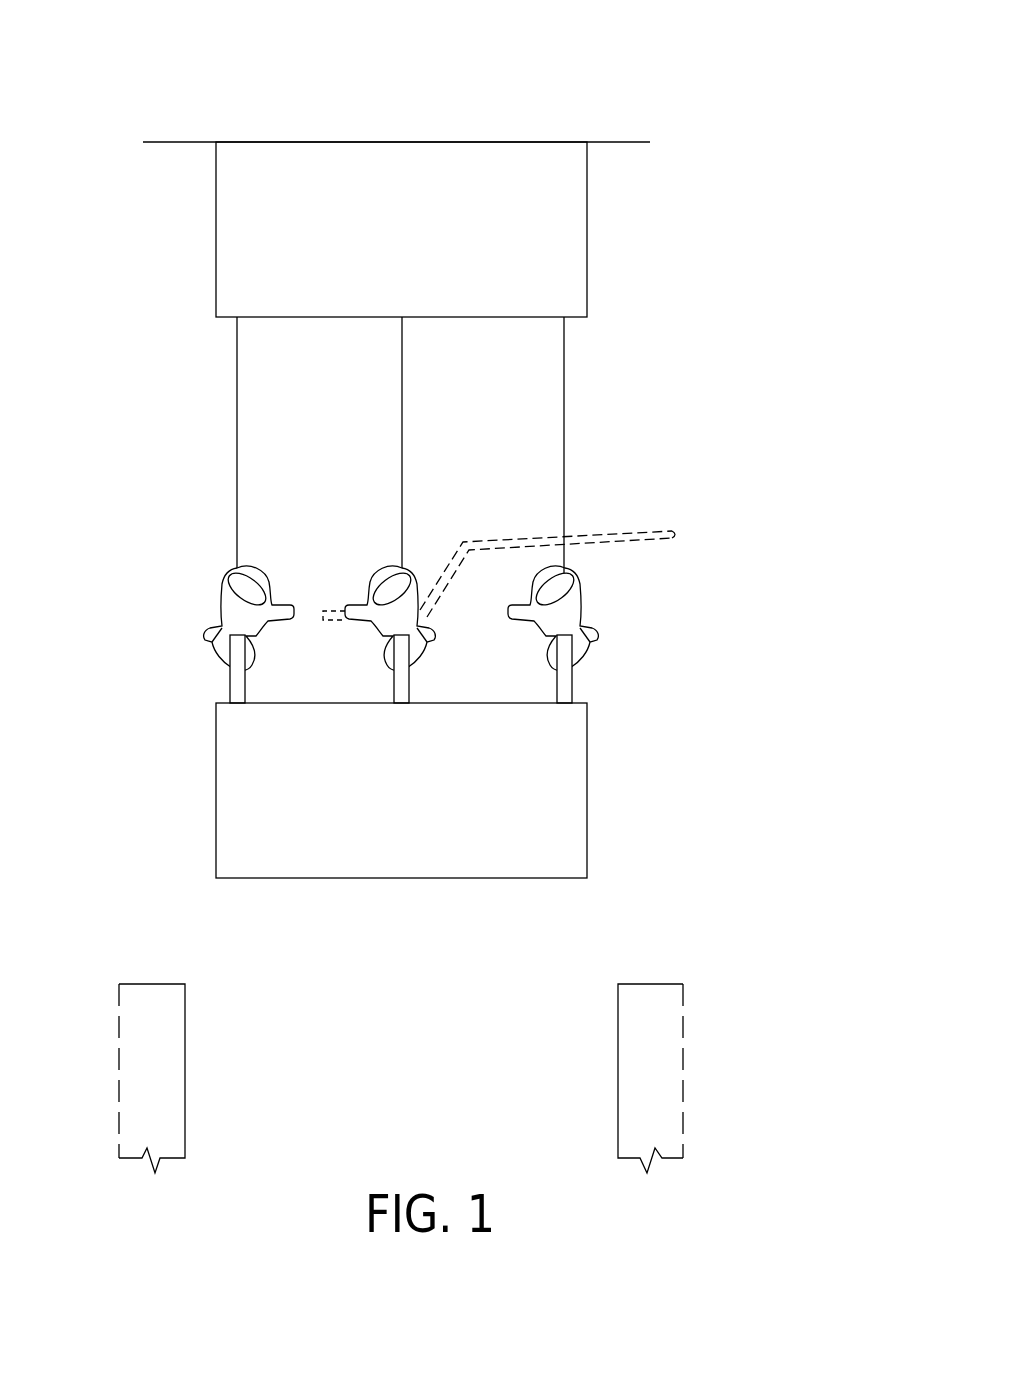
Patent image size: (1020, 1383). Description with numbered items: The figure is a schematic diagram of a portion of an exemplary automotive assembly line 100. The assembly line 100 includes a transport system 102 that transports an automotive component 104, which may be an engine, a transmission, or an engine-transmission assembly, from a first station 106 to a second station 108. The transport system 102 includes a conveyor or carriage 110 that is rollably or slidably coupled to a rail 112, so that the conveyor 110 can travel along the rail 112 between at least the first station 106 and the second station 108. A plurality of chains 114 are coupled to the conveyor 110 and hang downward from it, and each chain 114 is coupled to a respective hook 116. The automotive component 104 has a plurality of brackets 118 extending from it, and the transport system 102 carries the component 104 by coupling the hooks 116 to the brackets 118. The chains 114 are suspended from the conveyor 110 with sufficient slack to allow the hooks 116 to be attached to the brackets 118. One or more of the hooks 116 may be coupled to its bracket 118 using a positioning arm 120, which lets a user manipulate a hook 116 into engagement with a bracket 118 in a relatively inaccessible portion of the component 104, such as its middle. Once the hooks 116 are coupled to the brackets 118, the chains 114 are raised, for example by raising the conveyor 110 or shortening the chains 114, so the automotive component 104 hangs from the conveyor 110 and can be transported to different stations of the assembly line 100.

The automotive assembly line 100 is at (655, 90).
The transport system 102 is at (325, 103).
The automotive component 104 is at (423, 809).
The first station 106 is at (160, 984).
The second station 108 is at (650, 984).
The conveyor 110 is at (423, 245).
The rail 112 is at (620, 144).
The chains 114 is at (237, 423).
The hook 116 is at (227, 567).
The brackets 118 is at (230, 691).
The positioning arm 120 is at (630, 530).